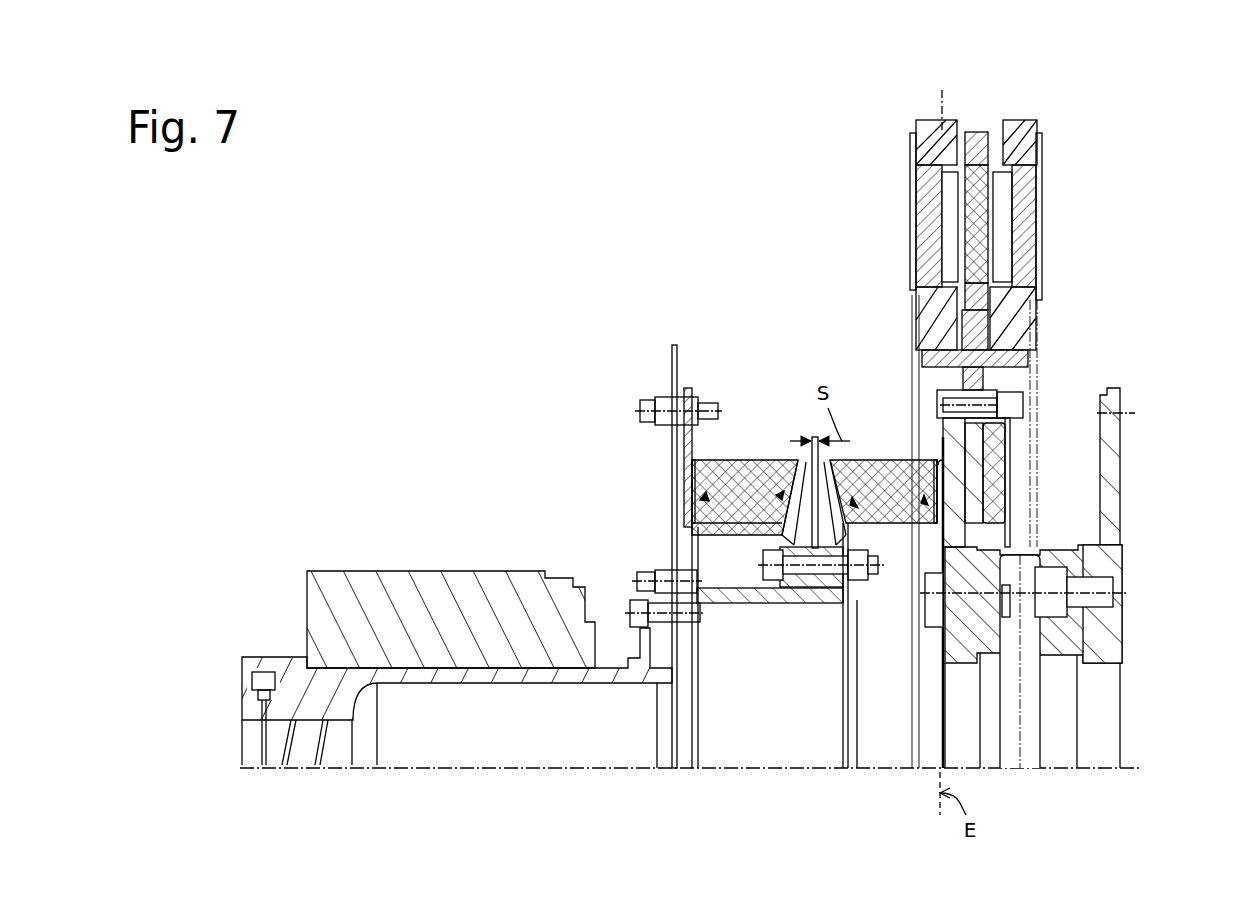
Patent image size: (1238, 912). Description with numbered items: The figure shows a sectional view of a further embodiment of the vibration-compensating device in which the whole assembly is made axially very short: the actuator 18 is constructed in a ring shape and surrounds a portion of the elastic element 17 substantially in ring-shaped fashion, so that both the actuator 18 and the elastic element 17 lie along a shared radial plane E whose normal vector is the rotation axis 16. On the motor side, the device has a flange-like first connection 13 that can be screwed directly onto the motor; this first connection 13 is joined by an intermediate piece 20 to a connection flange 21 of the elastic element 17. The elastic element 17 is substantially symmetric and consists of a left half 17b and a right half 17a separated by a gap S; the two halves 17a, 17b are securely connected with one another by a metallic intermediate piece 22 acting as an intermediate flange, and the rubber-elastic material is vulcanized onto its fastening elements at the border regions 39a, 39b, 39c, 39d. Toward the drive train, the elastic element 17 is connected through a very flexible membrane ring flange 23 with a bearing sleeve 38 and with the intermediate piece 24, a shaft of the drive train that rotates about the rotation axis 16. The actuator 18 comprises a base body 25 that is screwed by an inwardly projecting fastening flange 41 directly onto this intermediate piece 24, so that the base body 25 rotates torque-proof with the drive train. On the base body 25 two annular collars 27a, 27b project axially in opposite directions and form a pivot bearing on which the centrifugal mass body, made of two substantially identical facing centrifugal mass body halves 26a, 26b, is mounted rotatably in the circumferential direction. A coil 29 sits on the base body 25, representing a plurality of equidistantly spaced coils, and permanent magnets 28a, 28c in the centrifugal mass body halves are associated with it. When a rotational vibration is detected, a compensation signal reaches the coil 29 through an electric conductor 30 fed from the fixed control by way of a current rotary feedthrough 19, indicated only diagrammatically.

The first connection 13 is at (1113, 473).
The rotation axis 16 is at (1057, 772).
The elastic element 17 is at (800, 362).
The right half of the elastic element 17a is at (908, 458).
The left half of the elastic element 17b is at (736, 460).
The actuator 18 is at (996, 102).
The current rotary feedthrough 19 is at (406, 548).
The intermediate piece 20 is at (1065, 562).
The connection flange 21 is at (985, 475).
The intermediate piece 22 is at (785, 587).
The membrane ring flange 23 is at (670, 450).
The intermediate piece 24 is at (553, 690).
The base body 25 is at (977, 335).
The centrifugal mass body half 26a is at (1020, 120).
The centrifugal mass body half 26b is at (930, 120).
The annular collar 27a is at (1010, 347).
The annular collar 27b is at (925, 292).
The permanent magnet 28a is at (1000, 237).
The side element 28c is at (947, 205).
The coil 29 is at (993, 203).
The electric conductor 30 is at (1068, 392).
The bearing sleeve 38 is at (812, 588).
The border region 39a is at (905, 530).
The border region 39b is at (858, 500).
The border region 39c is at (778, 490).
The border region 39d is at (727, 527).
The fastening flange 41 is at (978, 373).